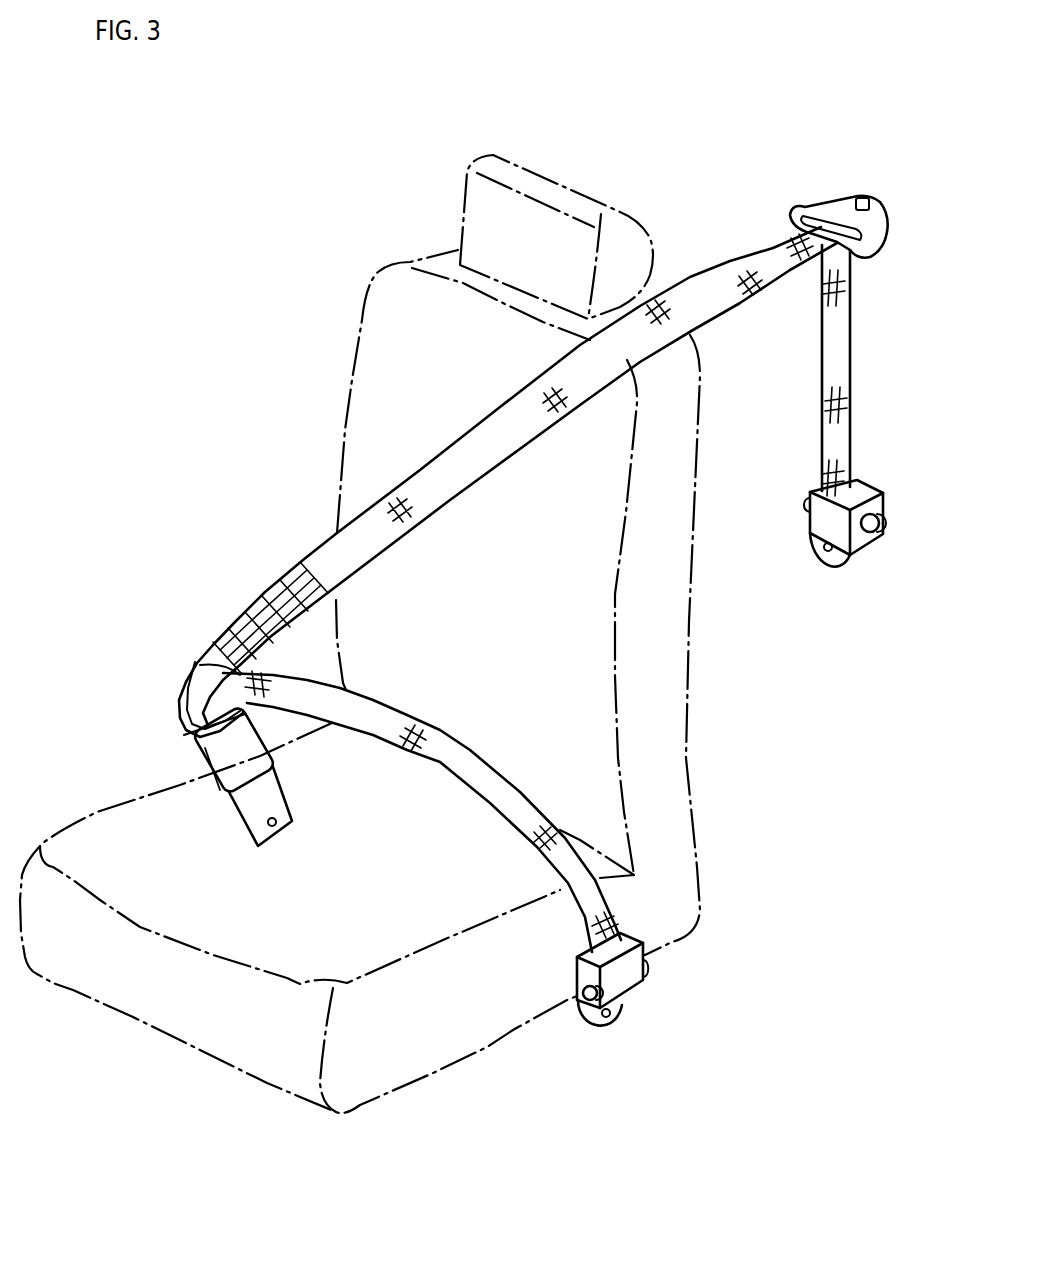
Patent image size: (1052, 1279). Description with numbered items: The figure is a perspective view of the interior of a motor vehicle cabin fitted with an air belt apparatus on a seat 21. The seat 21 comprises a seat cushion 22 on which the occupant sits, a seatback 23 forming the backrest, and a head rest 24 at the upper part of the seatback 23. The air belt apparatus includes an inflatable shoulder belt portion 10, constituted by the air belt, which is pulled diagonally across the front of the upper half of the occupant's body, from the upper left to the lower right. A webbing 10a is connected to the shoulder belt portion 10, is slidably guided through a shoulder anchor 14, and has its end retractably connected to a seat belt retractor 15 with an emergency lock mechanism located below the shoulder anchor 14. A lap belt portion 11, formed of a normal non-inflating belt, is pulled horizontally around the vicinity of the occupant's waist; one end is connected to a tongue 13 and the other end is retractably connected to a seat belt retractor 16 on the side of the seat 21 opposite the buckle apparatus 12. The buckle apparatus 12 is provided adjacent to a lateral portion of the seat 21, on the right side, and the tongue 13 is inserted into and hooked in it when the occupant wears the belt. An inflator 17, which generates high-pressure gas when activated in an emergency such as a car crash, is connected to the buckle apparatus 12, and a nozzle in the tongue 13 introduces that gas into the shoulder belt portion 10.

The inflatable shoulder belt portion 10 is at (498, 447).
The webbing 10a is at (840, 340).
The lap belt portion 11 is at (466, 752).
The buckle apparatus 12 is at (263, 760).
The tongue 13 is at (183, 712).
The shoulder anchor 14 is at (845, 206).
The seat belt retractor 15 is at (868, 546).
The seat belt retractor 16 is at (630, 982).
The inflator 17 is at (228, 810).
The seat 21 is at (330, 344).
The seat cushion 22 is at (90, 828).
The seatback 23 is at (338, 407).
The head rest 24 is at (558, 186).